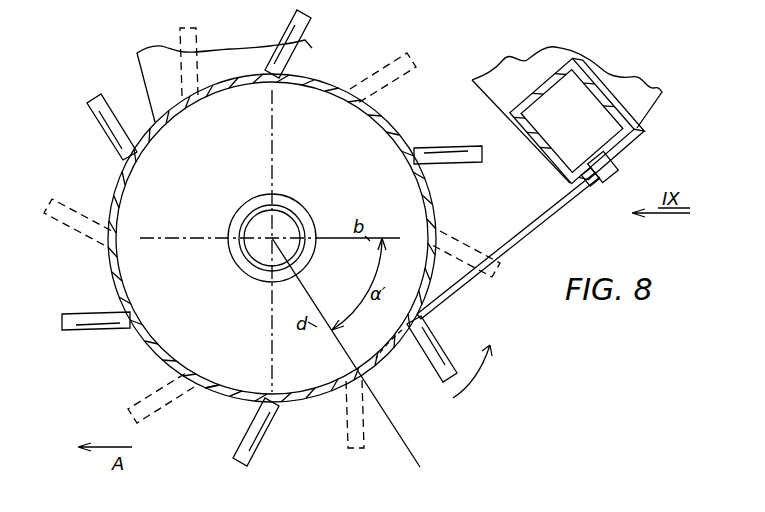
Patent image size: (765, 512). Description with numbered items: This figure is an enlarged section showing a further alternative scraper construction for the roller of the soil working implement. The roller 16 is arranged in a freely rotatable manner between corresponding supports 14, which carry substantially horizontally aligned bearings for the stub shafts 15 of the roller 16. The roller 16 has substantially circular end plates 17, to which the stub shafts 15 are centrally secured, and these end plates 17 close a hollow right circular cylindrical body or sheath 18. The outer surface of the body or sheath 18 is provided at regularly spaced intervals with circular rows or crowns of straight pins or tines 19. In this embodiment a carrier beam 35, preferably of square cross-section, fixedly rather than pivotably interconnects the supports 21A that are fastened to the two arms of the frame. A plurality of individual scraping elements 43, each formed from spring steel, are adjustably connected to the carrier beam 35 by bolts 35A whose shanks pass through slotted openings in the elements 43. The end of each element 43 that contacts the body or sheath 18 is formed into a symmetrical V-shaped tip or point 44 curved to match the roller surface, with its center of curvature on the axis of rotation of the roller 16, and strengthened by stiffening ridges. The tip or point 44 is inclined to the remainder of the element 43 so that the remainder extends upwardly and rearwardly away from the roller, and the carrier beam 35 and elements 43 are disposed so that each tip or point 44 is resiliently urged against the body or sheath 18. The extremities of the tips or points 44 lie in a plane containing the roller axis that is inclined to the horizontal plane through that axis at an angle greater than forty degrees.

The support 14 is at (310, 76).
The stub shaft 15 is at (258, 220).
The roller 16 is at (105, 276).
The end plate 17 is at (156, 331).
The body or sheath 18 is at (233, 394).
The pin or tine 19 is at (342, 452).
The support 21A is at (518, 63).
The carrier beam 35 is at (541, 156).
The bolt 35A is at (619, 166).
The scraping element 43 is at (524, 233).
The V-shaped tip or point 44 is at (404, 346).